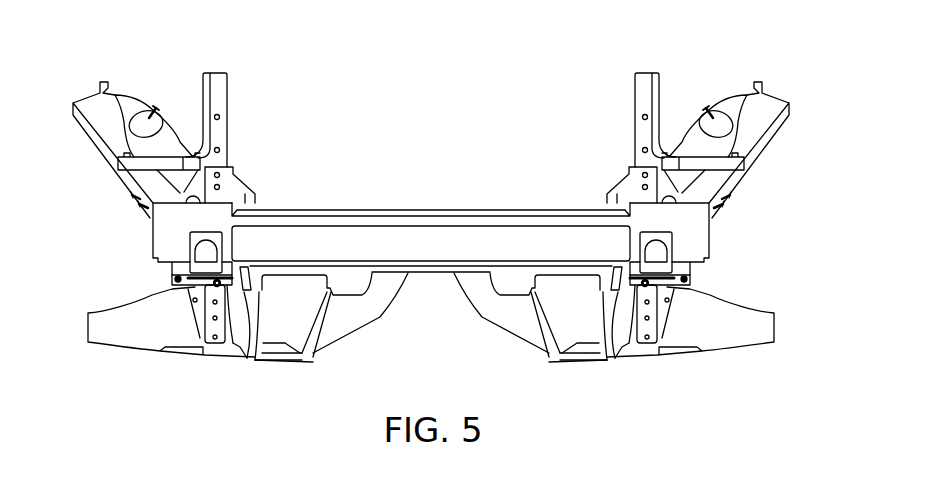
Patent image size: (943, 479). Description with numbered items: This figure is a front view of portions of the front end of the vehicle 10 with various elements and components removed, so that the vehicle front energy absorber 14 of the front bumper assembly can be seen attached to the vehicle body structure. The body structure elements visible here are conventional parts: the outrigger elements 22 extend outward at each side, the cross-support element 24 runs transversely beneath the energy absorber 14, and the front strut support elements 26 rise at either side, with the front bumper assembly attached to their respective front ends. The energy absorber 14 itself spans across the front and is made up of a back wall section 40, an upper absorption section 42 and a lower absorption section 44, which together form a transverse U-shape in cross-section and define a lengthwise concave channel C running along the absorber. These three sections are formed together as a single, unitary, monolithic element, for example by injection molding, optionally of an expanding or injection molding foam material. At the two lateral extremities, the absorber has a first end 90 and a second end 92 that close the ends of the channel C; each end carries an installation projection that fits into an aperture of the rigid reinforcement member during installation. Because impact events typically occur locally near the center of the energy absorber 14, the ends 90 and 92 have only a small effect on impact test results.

The vehicle 10 is at (577, 32).
The energy absorber 14 is at (525, 242).
The outrigger elements 22 is at (133, 327).
The cross-support element 24 is at (502, 313).
The front strut support elements 26 is at (98, 120).
The back wall section 40 is at (343, 243).
The upper absorption section 42 is at (475, 220).
The lower absorption section 44 is at (433, 268).
The first end 90 is at (173, 222).
The second end 92 is at (688, 223).
The concave channel C is at (410, 242).